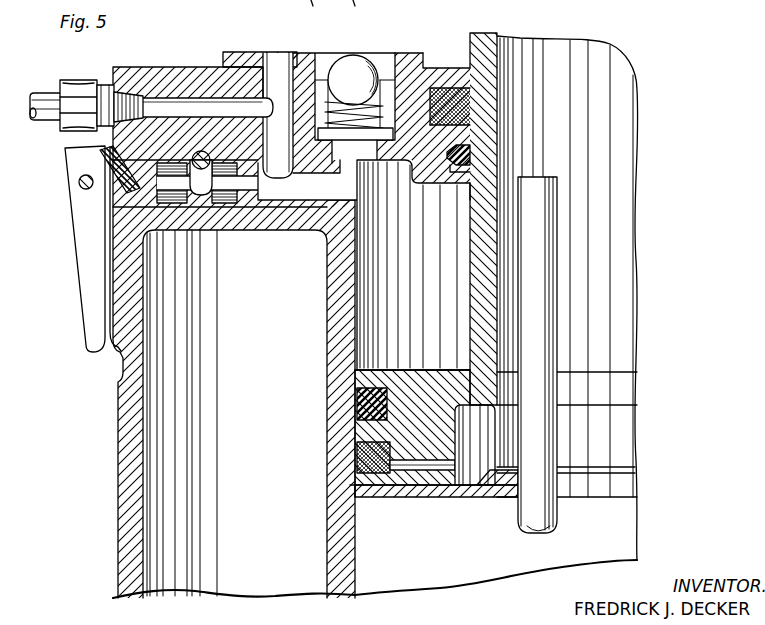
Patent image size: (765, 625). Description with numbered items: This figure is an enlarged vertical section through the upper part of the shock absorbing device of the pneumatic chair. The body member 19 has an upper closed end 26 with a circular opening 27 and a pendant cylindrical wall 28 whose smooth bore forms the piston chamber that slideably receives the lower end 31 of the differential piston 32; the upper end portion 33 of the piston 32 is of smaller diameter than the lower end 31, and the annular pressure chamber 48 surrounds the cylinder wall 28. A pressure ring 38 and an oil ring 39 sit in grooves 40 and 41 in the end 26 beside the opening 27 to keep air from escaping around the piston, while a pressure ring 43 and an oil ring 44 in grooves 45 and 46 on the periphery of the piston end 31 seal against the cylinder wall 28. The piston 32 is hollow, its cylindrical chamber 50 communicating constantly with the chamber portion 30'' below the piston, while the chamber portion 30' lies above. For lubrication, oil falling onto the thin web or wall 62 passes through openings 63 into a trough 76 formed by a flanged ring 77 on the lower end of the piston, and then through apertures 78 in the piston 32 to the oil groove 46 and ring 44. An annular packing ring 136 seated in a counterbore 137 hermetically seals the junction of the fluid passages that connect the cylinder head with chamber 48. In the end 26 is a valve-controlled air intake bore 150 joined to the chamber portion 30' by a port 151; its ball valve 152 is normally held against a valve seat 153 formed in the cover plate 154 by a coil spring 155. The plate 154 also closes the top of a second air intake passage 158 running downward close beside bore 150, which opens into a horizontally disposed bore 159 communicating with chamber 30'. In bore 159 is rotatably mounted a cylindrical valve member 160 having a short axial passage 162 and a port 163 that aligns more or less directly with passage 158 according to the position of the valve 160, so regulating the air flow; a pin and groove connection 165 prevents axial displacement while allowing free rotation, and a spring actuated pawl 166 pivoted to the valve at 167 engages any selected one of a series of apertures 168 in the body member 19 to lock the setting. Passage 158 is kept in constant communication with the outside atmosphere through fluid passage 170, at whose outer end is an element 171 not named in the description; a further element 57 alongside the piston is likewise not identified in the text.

The body member 19 is at (122, 550).
The upper closed end 26 is at (180, 70).
The circular opening 27 is at (465, 67).
The pendant cylindrical wall 28 is at (327, 553).
The chamber portion 30' is at (413, 265).
The chamber portion 30'' is at (538, 565).
The lower end of piston 31 is at (408, 373).
The differential piston 32 is at (488, 148).
The upper end portion of piston 33 is at (478, 33).
The pressure ring 38 is at (448, 151).
The oil ring 39 is at (431, 97).
The groove 40 is at (451, 167).
The groove 41 is at (433, 113).
The pressure ring 43 is at (362, 402).
The oil ring 44 is at (358, 458).
The groove 45 is at (362, 385).
The oil groove 46 is at (355, 487).
The annular pressure chamber 48 is at (228, 573).
The cylindrical chamber 50 is at (627, 153).
The rod 57 is at (552, 338).
The web or wall 62 is at (612, 405).
The openings 63 is at (625, 385).
The trough 76 is at (467, 477).
The flanged ring 77 is at (493, 487).
The apertures 78 is at (418, 465).
The annular packing ring 136 is at (310, 11).
The counterbore 137 is at (355, 11).
The air intake bore 150 is at (295, 53).
The valve spring 151 is at (360, 159).
The ball valve 152 is at (357, 65).
The valve seat 153 is at (328, 53).
The cover plate 154 is at (253, 54).
The coil spring 155 is at (387, 123).
The second air intake passage 158 is at (258, 83).
The horizontally disposed bore 159 is at (336, 205).
The cylindrical valve member 160 is at (234, 195).
The axial passage 162 is at (296, 200).
The port 163 is at (261, 205).
The pin and groove connection 165 is at (200, 152).
The spring actuated pawl 166 is at (87, 258).
The pivot 167 is at (79, 180).
The apertures 168 is at (113, 360).
The fluid passage 170 is at (149, 100).
The tube fitting 171 is at (43, 93).